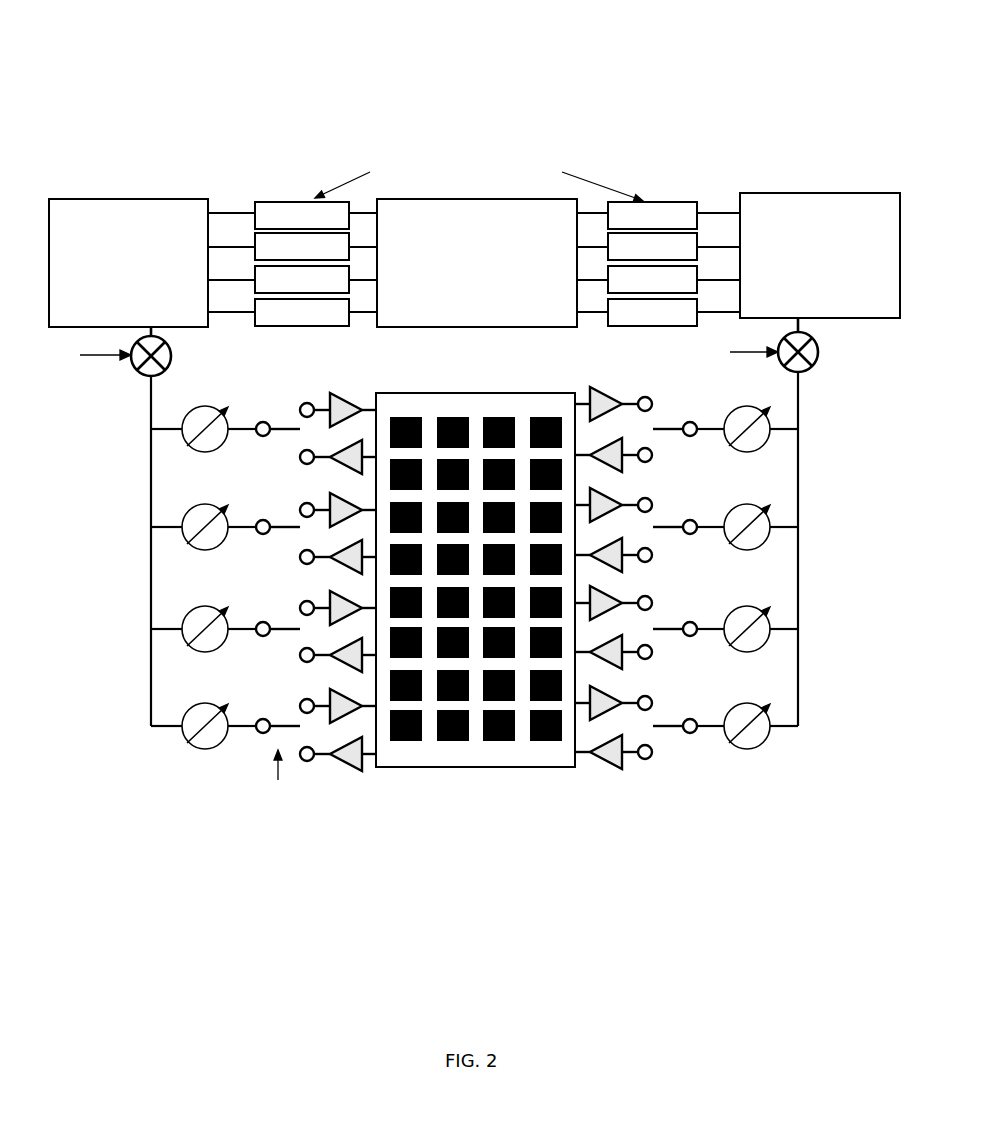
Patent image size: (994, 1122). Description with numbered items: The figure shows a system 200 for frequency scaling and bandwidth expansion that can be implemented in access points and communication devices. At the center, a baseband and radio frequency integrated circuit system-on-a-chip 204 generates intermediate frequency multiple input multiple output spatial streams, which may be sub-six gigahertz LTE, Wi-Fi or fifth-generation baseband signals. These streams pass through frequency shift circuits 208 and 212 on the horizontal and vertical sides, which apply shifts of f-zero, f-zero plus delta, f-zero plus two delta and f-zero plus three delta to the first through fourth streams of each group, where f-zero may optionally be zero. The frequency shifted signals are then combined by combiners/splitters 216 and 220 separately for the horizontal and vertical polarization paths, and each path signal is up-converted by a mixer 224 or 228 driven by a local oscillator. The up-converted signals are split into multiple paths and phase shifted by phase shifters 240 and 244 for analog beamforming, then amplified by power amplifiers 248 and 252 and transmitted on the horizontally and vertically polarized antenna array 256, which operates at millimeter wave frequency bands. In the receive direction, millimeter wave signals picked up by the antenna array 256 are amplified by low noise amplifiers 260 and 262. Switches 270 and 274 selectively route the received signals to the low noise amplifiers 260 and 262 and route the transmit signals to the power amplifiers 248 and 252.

The system 200 is at (497, 40).
The radio frequency integrated circuit system-on-a-chip 204 is at (383, 195).
The frequency shift circuit 208 is at (285, 200).
The frequency shift circuit 212 is at (667, 203).
The combiner/splitter 216 is at (123, 197).
The combiner/splitter 220 is at (805, 190).
The mixer 224 is at (133, 365).
The mixer 228 is at (822, 360).
The phase shifter 240 is at (188, 732).
The phase shifter 244 is at (762, 743).
The power amplifier 248 is at (320, 392).
The power amplifier 252 is at (625, 463).
The antenna array 256 is at (495, 392).
The low noise amplifier 260 is at (352, 770).
The low noise amplifier 262 is at (620, 400).
The switch 270 is at (287, 735).
The switch 274 is at (668, 730).